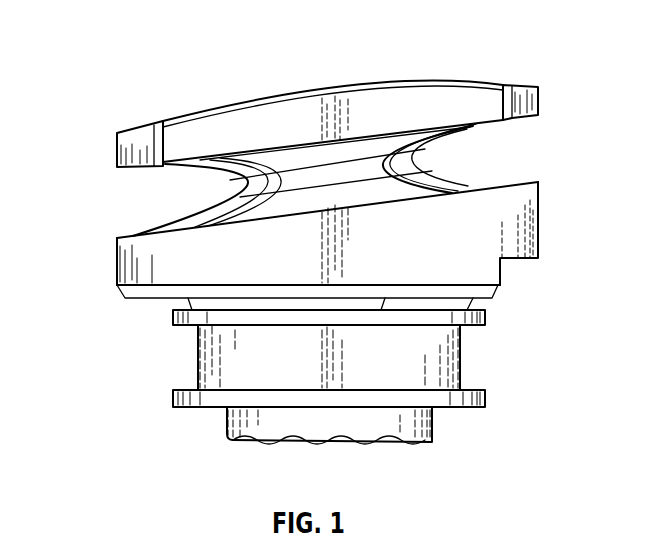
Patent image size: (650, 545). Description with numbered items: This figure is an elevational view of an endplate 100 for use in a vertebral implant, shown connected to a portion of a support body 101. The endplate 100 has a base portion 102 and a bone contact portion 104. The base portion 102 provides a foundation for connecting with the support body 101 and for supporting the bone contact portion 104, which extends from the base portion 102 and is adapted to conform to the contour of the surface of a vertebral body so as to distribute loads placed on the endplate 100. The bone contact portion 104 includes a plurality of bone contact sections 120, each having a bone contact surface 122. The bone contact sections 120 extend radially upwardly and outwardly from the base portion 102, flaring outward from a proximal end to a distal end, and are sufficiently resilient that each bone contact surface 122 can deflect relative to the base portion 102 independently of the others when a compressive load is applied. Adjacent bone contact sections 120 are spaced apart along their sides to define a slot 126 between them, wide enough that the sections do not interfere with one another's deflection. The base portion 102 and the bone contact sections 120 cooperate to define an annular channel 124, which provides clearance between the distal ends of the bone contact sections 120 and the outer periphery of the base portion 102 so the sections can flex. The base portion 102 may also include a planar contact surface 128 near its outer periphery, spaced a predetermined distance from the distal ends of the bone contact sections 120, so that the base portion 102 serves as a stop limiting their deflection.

The endplate 100 is at (134, 102).
The support body 101 is at (493, 402).
The base portion 102 is at (514, 266).
The bone contact portion 104 is at (490, 76).
The bone contact sections 120 is at (537, 97).
The bone contact surface 122 is at (363, 83).
The annular channel 124 is at (468, 182).
The slot 126 is at (156, 142).
The planar contact surface 128 is at (140, 236).